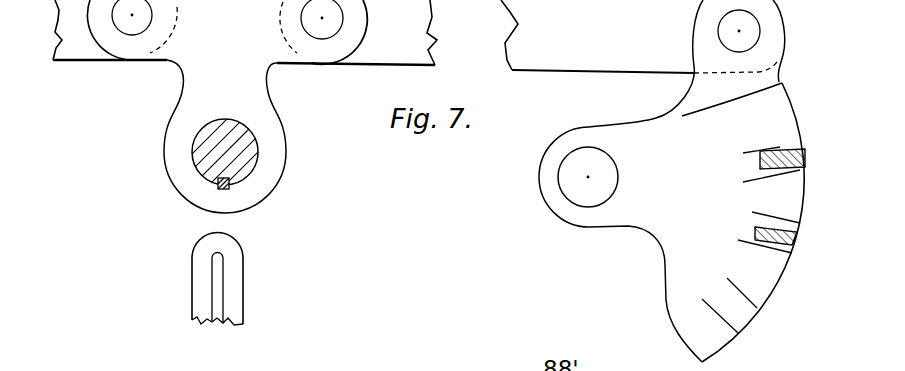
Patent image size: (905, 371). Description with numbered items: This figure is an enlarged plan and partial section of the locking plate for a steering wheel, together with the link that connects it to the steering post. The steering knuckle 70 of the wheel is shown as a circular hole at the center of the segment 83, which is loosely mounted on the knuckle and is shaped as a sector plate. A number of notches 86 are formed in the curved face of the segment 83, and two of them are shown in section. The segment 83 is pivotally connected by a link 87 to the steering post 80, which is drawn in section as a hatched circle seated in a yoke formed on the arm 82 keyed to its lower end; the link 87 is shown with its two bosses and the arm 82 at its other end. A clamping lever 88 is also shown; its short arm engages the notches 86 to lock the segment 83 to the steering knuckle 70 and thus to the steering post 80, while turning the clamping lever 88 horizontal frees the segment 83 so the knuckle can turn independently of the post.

The steering knuckle 70 is at (572, 180).
The steering post 80 is at (245, 157).
The arm 82 is at (262, 60).
The segment 83 is at (637, 213).
The notches 86 is at (772, 74).
The links 87 is at (82, 48).
The clamping lever 88 is at (235, 293).